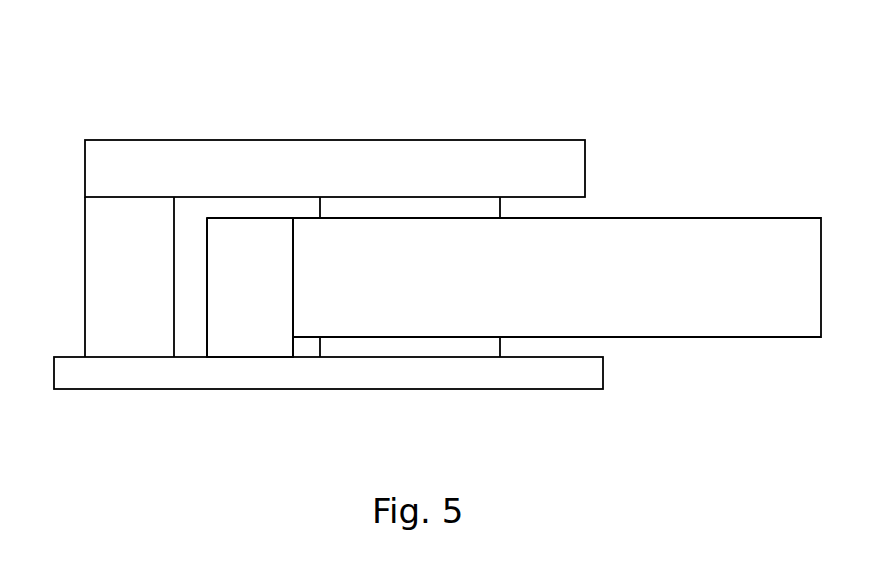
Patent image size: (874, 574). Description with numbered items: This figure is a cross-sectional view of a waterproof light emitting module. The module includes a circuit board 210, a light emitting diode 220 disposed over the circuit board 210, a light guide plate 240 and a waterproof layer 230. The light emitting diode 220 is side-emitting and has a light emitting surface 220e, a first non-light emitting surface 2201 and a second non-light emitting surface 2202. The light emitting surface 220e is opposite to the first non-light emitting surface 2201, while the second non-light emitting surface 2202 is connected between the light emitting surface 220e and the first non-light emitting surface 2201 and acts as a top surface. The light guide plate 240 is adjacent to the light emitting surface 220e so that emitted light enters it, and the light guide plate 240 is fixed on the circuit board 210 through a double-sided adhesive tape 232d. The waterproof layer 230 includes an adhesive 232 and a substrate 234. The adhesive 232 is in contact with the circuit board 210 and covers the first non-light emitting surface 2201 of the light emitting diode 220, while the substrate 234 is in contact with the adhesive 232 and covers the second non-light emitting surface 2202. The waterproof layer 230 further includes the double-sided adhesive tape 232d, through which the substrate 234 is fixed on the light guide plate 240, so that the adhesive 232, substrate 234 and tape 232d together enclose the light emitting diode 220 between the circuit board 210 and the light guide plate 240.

The circuit board 210 is at (566, 373).
The light emitting diode 220 is at (243, 347).
The first non-light emitting surface 2201 is at (207, 317).
The second non-light emitting surface 2202 is at (272, 218).
The light emitting surface 220e is at (293, 319).
The waterproof layer 230 is at (335, 239).
The adhesive 232 is at (145, 210).
The double-sided adhesive tape 232d is at (410, 261).
The substrate 234 is at (220, 156).
The light guide plate 240 is at (740, 326).